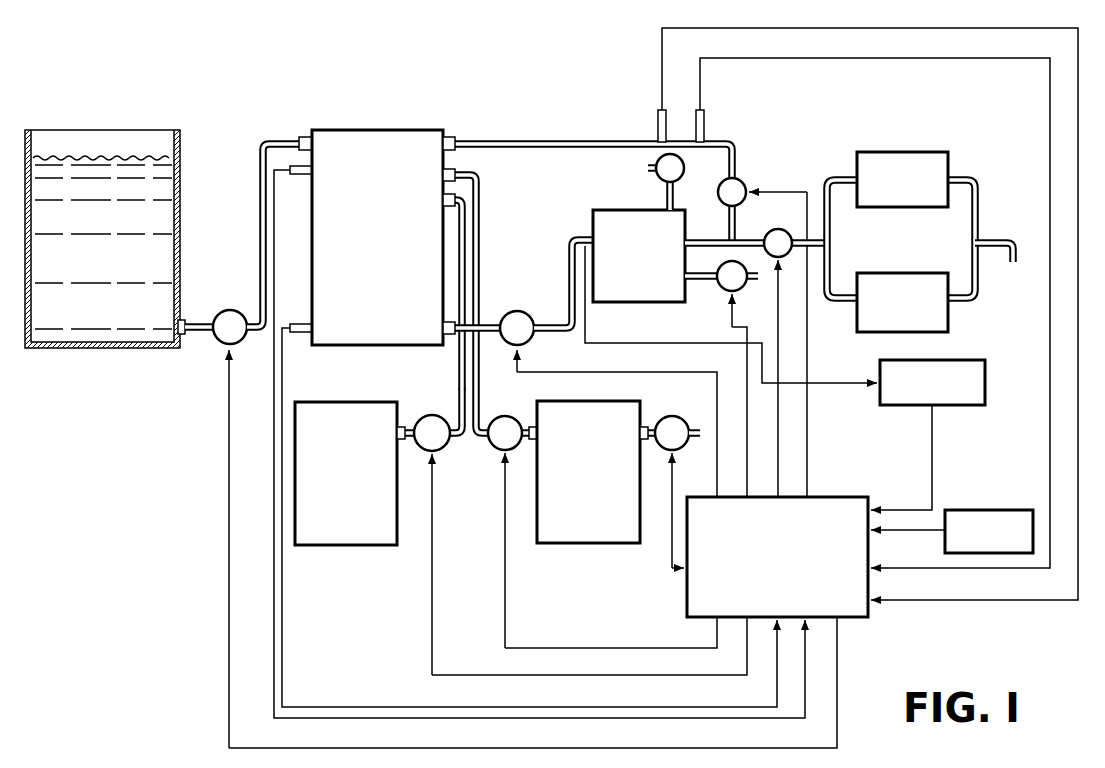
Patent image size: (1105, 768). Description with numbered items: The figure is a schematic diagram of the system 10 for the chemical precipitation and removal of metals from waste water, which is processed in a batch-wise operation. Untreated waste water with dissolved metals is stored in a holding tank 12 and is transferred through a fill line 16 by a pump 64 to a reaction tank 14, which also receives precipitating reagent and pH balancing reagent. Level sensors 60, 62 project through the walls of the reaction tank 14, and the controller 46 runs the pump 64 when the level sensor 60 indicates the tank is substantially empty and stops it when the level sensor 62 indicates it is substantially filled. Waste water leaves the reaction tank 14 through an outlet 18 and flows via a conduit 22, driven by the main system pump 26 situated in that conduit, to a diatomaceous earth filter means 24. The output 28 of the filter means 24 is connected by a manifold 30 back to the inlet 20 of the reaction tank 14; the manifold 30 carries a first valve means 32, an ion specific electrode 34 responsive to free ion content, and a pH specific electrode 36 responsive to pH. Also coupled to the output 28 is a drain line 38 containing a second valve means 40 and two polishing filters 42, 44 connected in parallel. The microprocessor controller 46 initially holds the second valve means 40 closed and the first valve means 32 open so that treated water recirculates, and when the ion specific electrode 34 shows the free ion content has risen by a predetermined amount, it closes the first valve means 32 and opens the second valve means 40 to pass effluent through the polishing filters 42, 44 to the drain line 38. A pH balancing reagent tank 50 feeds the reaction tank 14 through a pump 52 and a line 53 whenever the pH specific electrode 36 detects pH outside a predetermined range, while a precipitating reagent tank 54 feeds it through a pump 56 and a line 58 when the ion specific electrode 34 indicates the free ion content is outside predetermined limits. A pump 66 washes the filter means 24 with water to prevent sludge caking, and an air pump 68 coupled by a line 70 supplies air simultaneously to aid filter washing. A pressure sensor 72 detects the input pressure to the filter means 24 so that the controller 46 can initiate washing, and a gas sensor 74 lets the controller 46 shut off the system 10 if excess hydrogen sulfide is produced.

The system 10 is at (205, 408).
The holding tank 12 is at (87, 142).
The reaction tank 14 is at (367, 142).
The fill line 16 is at (300, 140).
The outlet 18 is at (458, 354).
The inlet 20 is at (450, 137).
The conduit 22 is at (590, 238).
The filter means 24 is at (608, 210).
The main system pump 26 is at (505, 312).
The output 28 is at (695, 239).
The manifold 30 is at (562, 140).
The first valve means 32 is at (742, 188).
The ion specific electrode 34 is at (705, 125).
The pH specific electrode 36 is at (657, 125).
The drain line 38 is at (1010, 240).
The second valve means 40 is at (768, 232).
The polishing filter 42 is at (940, 167).
The polishing filter 44 is at (886, 275).
The microprocessor controller 46 is at (828, 497).
The pH balancing reagent tank 50 is at (333, 402).
The pump 52 is at (418, 420).
The line 53 is at (456, 390).
The precipitating reagent tank 54 is at (580, 402).
The pump 56 is at (493, 420).
The line 58 is at (477, 385).
The level sensor 60 is at (300, 323).
The level sensor 62 is at (310, 178).
The pump 64 is at (218, 316).
The pump 66 is at (718, 292).
The air pump 68 is at (690, 158).
The line 70 is at (679, 194).
The pressure sensor 72 is at (975, 360).
The gas sensor 74 is at (983, 510).